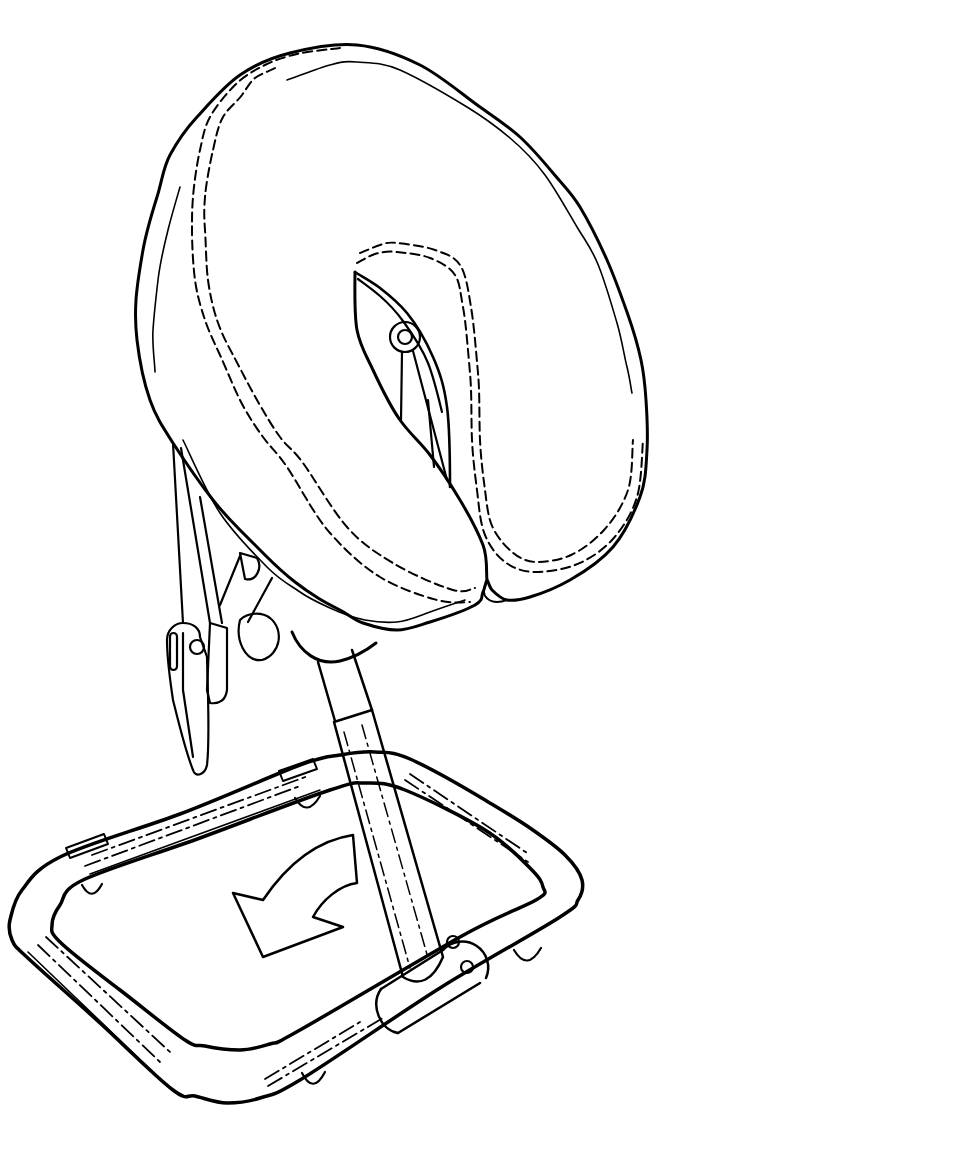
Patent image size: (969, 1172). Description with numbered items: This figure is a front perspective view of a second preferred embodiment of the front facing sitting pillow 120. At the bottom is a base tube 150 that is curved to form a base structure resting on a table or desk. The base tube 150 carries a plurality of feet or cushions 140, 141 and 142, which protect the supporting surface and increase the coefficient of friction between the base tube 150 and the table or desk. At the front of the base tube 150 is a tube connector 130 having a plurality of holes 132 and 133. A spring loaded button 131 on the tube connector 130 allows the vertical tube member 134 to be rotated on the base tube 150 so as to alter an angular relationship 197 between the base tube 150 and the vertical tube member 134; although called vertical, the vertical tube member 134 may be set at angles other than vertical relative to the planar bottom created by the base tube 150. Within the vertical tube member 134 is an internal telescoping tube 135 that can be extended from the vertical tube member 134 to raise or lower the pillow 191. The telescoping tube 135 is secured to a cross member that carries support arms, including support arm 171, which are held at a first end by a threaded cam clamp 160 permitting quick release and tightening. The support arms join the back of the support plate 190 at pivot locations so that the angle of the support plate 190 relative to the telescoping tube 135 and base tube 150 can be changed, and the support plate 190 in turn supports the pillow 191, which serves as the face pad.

The front facing sitting pillow 120 is at (645, 40).
The pillow 191 is at (583, 210).
The support plate 190 is at (313, 664).
The support arm 171 is at (180, 533).
The threaded cam clamp 160 is at (170, 713).
The telescoping tube 135 is at (362, 684).
The vertical tube member 134 is at (393, 943).
The base tube 150 is at (510, 810).
The tube connector 130 is at (437, 1007).
The spring loaded button 131 is at (451, 935).
The hole 133 is at (474, 970).
The hole 132 is at (542, 957).
The foot 141 is at (97, 896).
The foot 142 is at (300, 808).
The foot 140 is at (317, 1088).
The angular relationship 197 is at (263, 947).